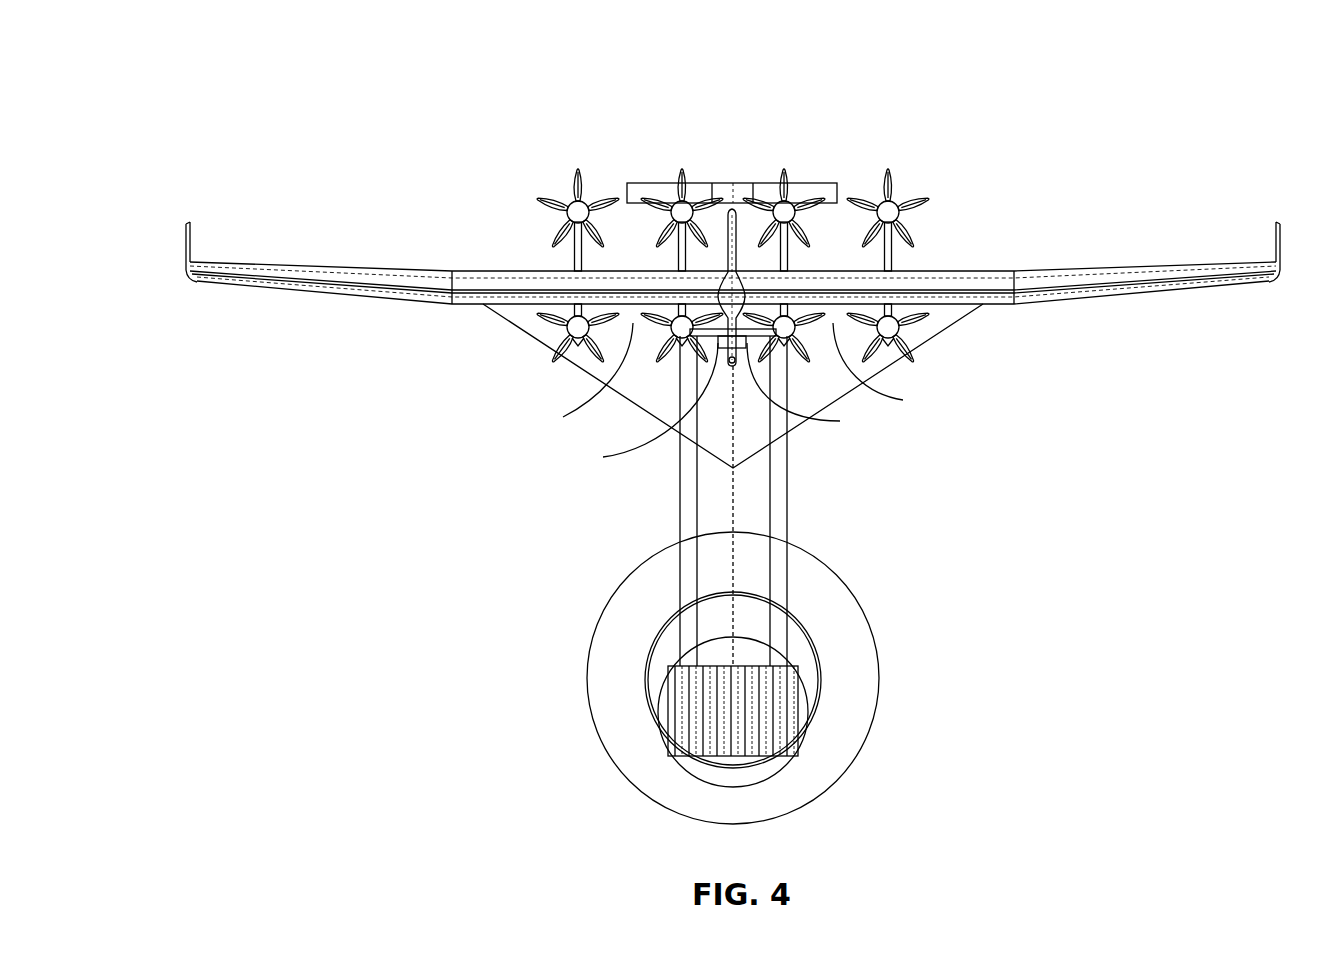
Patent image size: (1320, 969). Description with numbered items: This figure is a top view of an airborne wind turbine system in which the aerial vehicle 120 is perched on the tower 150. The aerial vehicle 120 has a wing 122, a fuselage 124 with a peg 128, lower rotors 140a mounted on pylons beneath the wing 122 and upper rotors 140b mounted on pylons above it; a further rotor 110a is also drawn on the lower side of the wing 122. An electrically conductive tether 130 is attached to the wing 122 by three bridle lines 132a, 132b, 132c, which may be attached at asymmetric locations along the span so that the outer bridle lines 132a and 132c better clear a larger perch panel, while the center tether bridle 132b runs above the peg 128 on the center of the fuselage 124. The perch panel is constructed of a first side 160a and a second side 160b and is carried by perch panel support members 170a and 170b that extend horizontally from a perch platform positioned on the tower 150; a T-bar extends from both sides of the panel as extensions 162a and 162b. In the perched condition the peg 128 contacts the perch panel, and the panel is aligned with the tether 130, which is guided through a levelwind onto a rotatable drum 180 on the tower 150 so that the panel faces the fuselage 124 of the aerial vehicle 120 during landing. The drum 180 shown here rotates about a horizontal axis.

The aerial vehicle 120 is at (1136, 70).
The wing 122 is at (975, 282).
The fuselage 124 is at (740, 333).
The peg 128 is at (730, 333).
The upper rotors 140b is at (578, 212).
The lower rotors 140a is at (895, 328).
The propulsor 110a is at (577, 330).
The bridle line 132a is at (582, 368).
The center tether bridle 132b is at (735, 408).
The bridle line 132c is at (888, 366).
The extension 162a is at (903, 400).
The extension 162b is at (563, 417).
The first side of perch panel 160a is at (840, 421).
The second side of perch panel 160b is at (603, 457).
The perch panel support member 170a is at (780, 473).
The perch panel support member 170b is at (687, 485).
The electrically conductive tether 130 is at (735, 517).
The tower 150 is at (512, 728).
The rotatable drum 180 is at (800, 707).